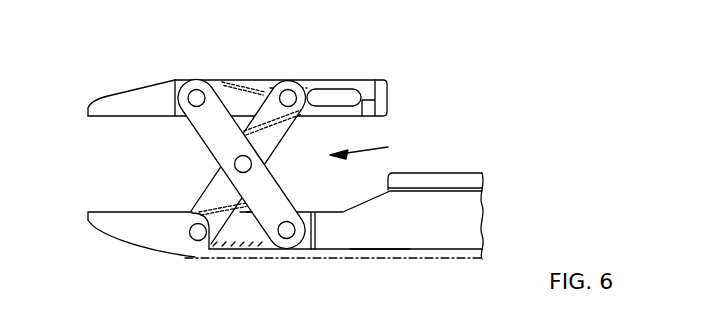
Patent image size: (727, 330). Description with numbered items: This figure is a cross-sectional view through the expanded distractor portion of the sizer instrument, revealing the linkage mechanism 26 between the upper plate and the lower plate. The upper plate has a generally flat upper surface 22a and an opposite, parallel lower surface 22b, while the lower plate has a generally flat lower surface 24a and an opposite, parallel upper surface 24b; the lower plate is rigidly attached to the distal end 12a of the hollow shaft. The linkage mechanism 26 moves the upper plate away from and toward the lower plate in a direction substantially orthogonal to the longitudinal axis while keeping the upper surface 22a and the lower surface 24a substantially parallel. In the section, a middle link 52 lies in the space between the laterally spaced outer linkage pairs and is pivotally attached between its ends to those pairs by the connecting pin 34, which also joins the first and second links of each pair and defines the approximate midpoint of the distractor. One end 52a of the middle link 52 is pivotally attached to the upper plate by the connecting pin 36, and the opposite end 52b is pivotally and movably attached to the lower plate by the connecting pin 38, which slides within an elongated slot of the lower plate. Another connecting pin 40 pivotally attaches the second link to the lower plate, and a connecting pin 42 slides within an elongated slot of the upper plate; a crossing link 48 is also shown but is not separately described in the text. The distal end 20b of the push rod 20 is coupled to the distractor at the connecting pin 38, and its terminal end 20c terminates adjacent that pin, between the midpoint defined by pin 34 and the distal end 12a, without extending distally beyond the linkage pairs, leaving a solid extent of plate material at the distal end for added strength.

The push rod 20 is at (478, 220).
The distal end of shaft 12a is at (437, 172).
The upper surface of upper plate 22a is at (123, 90).
The lower surface of upper plate 22b is at (151, 118).
The lower surface of lower plate 24a is at (181, 0).
The upper surface of lower plate 24b is at (148, 211).
The linkage mechanism 26 is at (376, 148).
The connecting pin 34 is at (256, 162).
The connecting pin 36 is at (194, 95).
The connecting pin 38 is at (299, 243).
The connecting pin 40 is at (194, 239).
The connecting pin 42 is at (295, 93).
The second link 48 is at (212, 193).
The middle link 52 is at (258, 206).
The end of middle link 52a is at (207, 79).
The opposite end of middle link 52b is at (320, 236).
The distal end of push rod 20b is at (350, 233).
The terminal end of push rod 20c is at (275, 251).